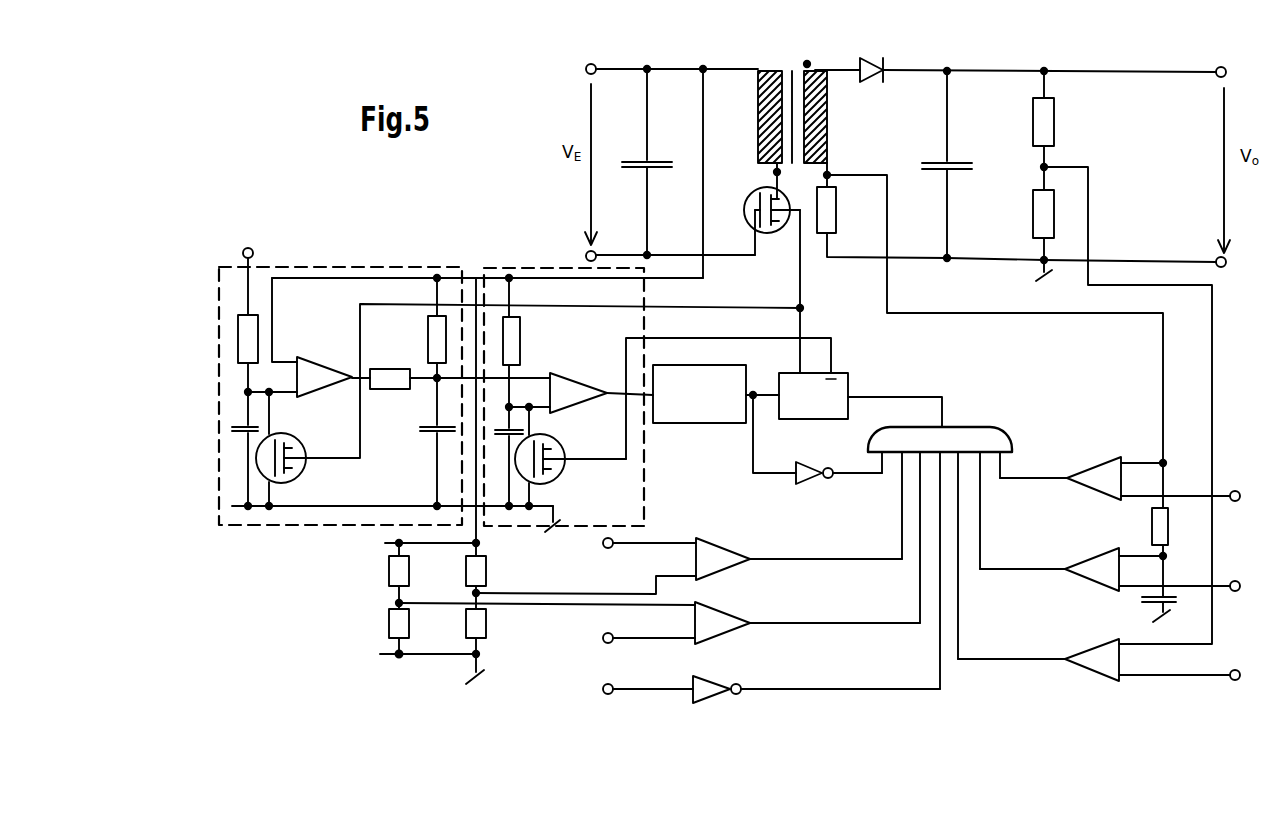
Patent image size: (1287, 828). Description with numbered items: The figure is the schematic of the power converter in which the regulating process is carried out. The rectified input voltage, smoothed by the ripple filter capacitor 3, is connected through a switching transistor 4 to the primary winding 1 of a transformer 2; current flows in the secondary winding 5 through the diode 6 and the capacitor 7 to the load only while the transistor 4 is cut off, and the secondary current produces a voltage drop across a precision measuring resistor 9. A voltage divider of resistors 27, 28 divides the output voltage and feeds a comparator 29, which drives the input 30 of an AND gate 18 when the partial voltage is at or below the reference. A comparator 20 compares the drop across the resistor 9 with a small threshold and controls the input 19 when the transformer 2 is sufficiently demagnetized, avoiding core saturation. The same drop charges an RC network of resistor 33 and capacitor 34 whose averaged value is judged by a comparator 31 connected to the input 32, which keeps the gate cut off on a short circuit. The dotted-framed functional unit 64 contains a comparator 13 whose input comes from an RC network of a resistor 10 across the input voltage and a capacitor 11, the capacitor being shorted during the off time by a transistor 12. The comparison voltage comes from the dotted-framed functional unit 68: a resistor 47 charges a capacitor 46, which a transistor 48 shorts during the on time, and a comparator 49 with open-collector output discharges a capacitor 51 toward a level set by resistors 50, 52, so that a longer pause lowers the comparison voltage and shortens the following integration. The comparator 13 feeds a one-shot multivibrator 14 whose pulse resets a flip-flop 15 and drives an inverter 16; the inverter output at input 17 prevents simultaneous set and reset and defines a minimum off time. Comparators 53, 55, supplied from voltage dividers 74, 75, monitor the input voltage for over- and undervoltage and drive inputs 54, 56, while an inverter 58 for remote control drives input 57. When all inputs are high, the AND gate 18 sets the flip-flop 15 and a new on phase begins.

The primary winding 1 is at (768, 72).
The transformer 2 is at (791, 163).
The ripple filter capacitor 3 is at (645, 160).
The transistor 4 is at (762, 200).
The secondary winding 5 is at (820, 72).
The diode 6 is at (872, 63).
The capacitor 7 is at (948, 165).
The precision measuring resistor 9 is at (830, 200).
The resistor 10 is at (512, 330).
The capacitor 11 is at (503, 433).
The transistor 12 is at (549, 472).
The comparator 13 is at (568, 385).
The one-shot multivibrator 14 is at (693, 423).
The flip-flop 15 is at (848, 375).
The inverter 16 is at (800, 478).
The input 17 is at (880, 455).
The AND gate 18 is at (910, 438).
The input 19 is at (1013, 450).
The comparator 20 is at (1103, 473).
The resistor 27 is at (1053, 105).
The resistor 28 is at (1045, 212).
The comparator 29 is at (1095, 665).
The input 30 is at (963, 452).
The comparator 31 is at (1105, 575).
The input 32 is at (983, 450).
The resistor 33 is at (1157, 518).
The capacitor 34 is at (1178, 600).
The capacitor 46 is at (232, 428).
The resistor 47 is at (245, 341).
The transistor 48 is at (262, 458).
The comparator 49 is at (305, 382).
The resistor 50 is at (388, 368).
The capacitor 51 is at (434, 425).
The resistor 52 is at (436, 325).
The comparator 53 is at (712, 560).
The input 54 is at (905, 455).
The comparator 55 is at (715, 625).
The input 56 is at (925, 455).
The input 57 is at (940, 452).
The inverter 58 is at (715, 689).
The functional unit 64 is at (600, 328).
The functional unit 68 is at (318, 315).
The voltage divider 74 is at (465, 585).
The voltage divider 75 is at (395, 570).